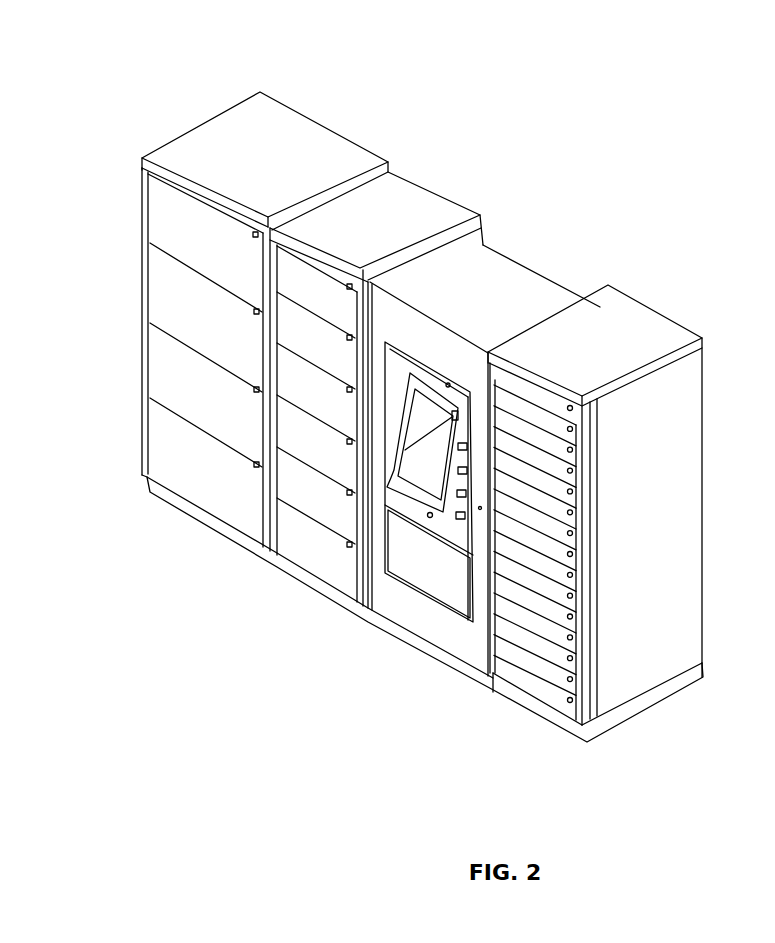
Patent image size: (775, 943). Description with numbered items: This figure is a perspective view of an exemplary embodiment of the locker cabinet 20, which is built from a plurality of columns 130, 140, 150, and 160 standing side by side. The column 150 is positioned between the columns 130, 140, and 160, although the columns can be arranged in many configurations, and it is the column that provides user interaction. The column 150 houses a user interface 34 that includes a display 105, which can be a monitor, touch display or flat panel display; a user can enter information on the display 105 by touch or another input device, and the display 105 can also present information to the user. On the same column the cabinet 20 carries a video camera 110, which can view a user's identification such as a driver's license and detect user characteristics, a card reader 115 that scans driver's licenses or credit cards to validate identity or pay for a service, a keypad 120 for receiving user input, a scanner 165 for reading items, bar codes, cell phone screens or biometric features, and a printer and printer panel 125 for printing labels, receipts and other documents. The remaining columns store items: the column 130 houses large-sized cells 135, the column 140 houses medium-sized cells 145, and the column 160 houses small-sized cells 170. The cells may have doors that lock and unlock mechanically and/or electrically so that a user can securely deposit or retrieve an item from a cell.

The cabinet 20 is at (486, 34).
The user interface 34 is at (412, 372).
The display 105 is at (416, 468).
The video camera 110 is at (463, 474).
The card reader 115 is at (461, 496).
The keypad 120 is at (459, 518).
The printer and printer panel 125 is at (461, 600).
The column 130 is at (167, 548).
The large-sized cells 135 is at (168, 368).
The column 140 is at (355, 372).
The medium-sized cells 145 is at (303, 547).
The column 150 is at (431, 506).
The column 160 is at (595, 488).
The scanner 165 is at (428, 510).
The small-sized cells 170 is at (573, 588).